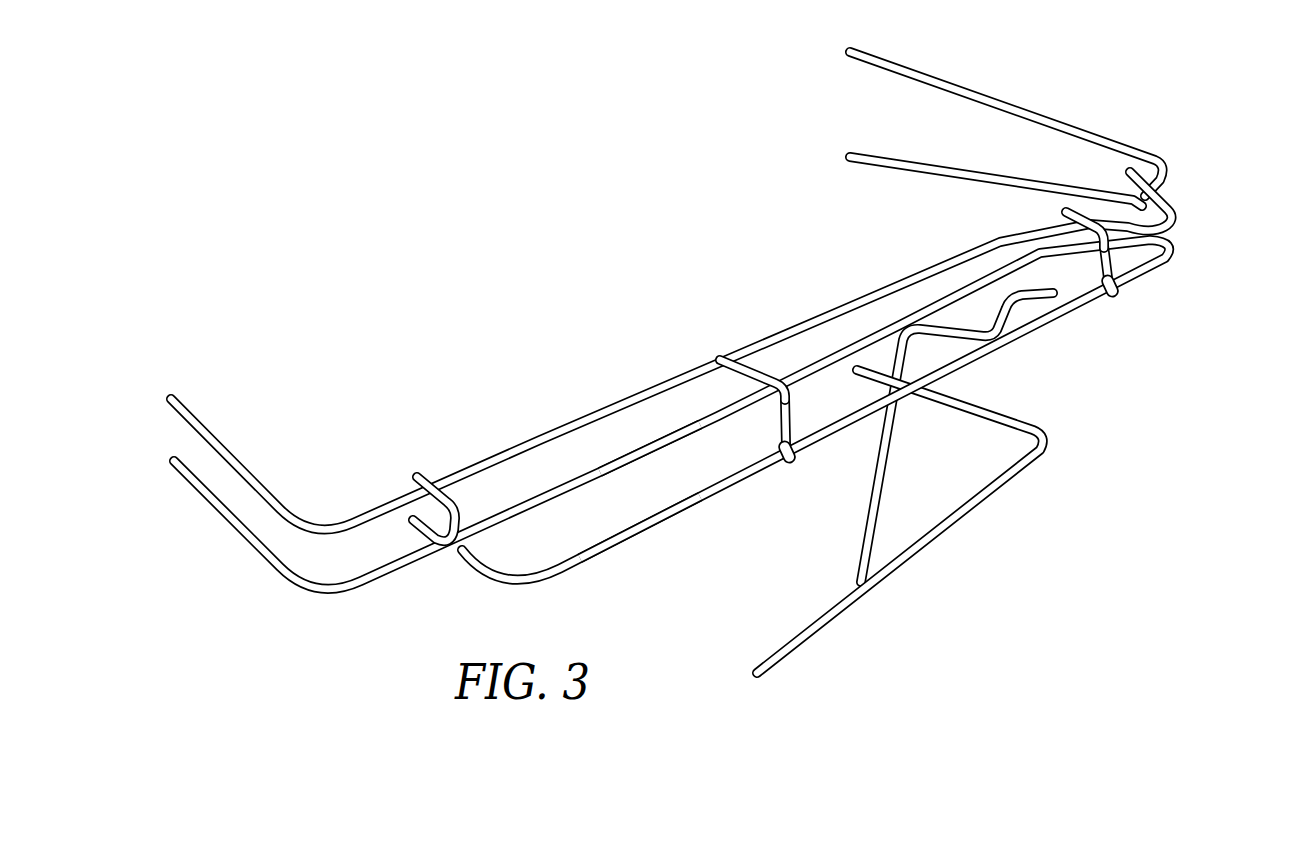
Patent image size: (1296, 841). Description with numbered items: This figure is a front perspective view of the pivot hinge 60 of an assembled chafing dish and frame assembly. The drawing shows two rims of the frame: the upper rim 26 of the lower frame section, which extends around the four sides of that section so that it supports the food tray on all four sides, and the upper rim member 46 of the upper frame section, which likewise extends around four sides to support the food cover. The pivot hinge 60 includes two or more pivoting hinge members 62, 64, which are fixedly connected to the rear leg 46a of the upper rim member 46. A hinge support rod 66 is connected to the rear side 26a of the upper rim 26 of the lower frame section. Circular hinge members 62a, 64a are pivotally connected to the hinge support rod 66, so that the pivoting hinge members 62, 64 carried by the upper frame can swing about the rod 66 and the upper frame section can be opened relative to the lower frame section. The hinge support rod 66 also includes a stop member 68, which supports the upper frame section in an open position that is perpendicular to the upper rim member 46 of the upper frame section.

The upper rim 26 is at (383, 588).
The rear side 26a is at (716, 421).
The upper rim member 46 is at (536, 428).
The rear leg 46a is at (1083, 230).
The pivot hinge 60 is at (1172, 126).
The pivoting hinge member 62 is at (1138, 289).
The circular hinge member 62a is at (1116, 306).
The pivoting hinge member 64 is at (755, 501).
The circular hinge member 64a is at (789, 478).
The hinge support rod 66 is at (618, 551).
The stop member 68 is at (1013, 326).